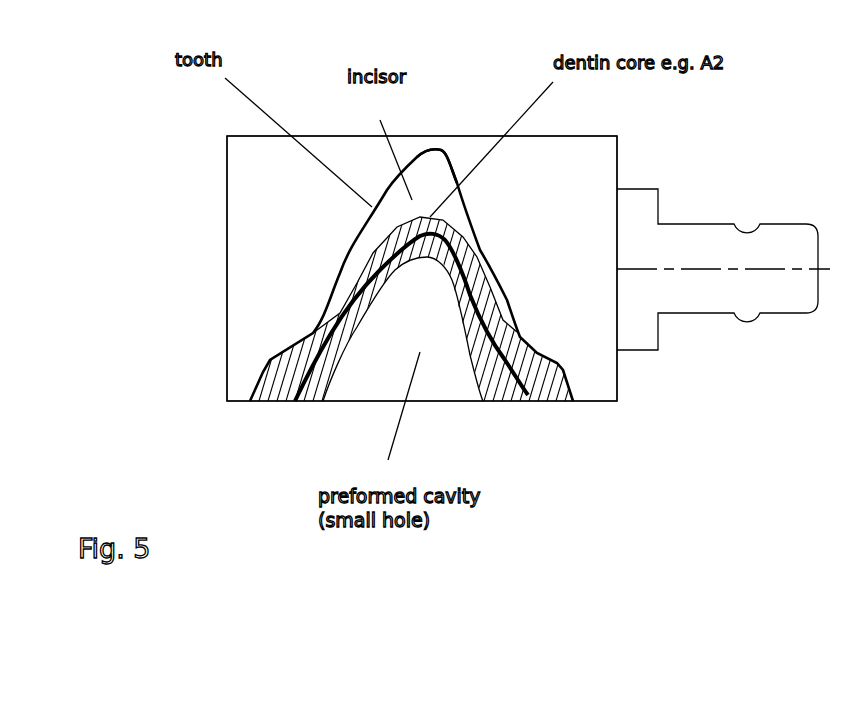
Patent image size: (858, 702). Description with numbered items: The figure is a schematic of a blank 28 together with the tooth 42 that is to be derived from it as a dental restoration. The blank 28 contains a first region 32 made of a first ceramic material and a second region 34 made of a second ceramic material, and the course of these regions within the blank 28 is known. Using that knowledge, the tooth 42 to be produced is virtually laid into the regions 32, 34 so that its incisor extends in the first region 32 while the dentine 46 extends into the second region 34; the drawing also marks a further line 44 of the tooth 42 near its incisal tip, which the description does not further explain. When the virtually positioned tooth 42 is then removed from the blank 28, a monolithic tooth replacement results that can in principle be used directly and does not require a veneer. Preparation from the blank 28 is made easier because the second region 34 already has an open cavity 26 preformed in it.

The open cavity 26 is at (440, 380).
The blank 28 is at (247, 283).
The first region 32 is at (268, 337).
The second region 34 is at (283, 373).
The tooth 42 is at (340, 267).
The incisal edge of tooth 44 is at (445, 173).
The dentine 46 is at (313, 392).